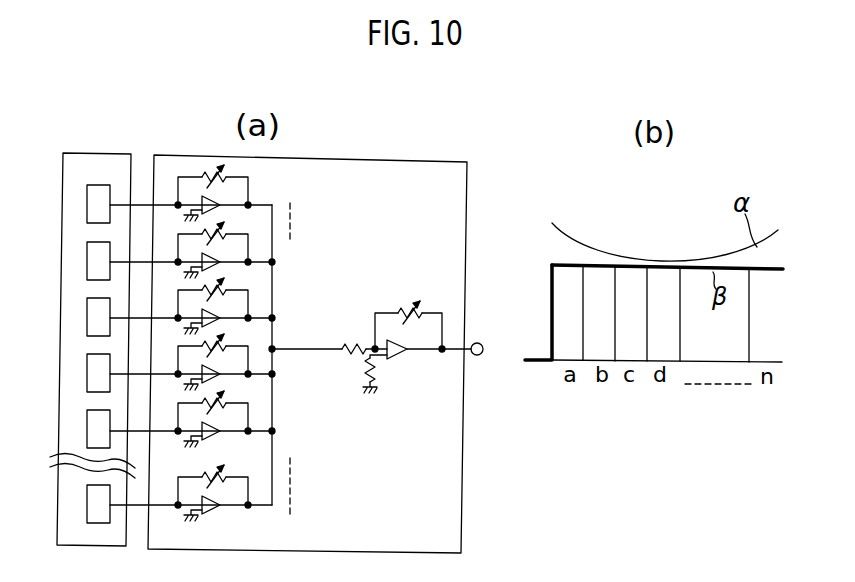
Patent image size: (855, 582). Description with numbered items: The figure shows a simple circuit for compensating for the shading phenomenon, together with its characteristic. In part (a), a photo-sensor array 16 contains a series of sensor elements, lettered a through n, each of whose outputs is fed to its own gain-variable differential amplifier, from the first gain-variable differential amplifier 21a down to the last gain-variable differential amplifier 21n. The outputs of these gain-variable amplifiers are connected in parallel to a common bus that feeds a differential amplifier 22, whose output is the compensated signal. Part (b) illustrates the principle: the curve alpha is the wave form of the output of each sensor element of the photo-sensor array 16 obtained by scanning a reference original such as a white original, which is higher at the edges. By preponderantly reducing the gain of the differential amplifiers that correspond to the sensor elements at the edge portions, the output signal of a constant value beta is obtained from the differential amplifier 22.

The photo-sensor array 16 is at (94, 158).
The gain-variable differential amplifier 21a is at (216, 201).
The gain-variable differential amplifier 21n is at (215, 509).
The differential amplifier 22 is at (398, 357).